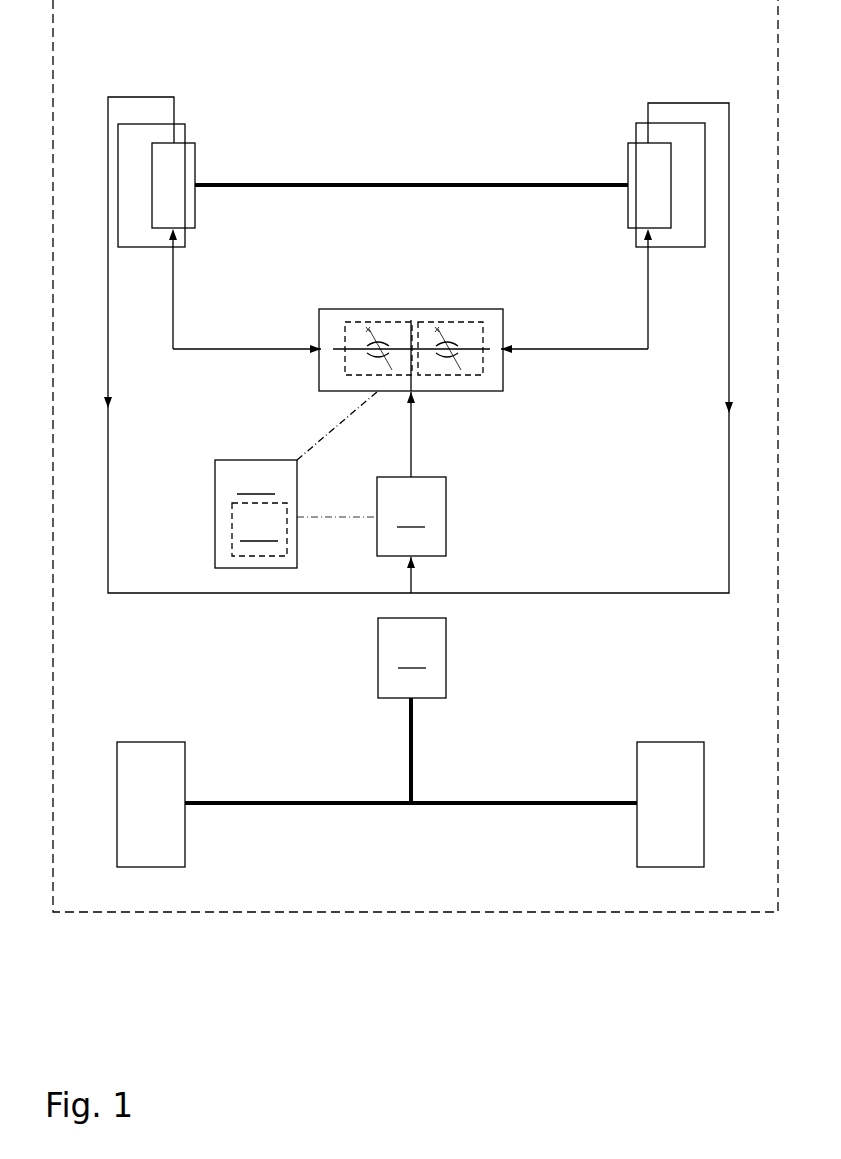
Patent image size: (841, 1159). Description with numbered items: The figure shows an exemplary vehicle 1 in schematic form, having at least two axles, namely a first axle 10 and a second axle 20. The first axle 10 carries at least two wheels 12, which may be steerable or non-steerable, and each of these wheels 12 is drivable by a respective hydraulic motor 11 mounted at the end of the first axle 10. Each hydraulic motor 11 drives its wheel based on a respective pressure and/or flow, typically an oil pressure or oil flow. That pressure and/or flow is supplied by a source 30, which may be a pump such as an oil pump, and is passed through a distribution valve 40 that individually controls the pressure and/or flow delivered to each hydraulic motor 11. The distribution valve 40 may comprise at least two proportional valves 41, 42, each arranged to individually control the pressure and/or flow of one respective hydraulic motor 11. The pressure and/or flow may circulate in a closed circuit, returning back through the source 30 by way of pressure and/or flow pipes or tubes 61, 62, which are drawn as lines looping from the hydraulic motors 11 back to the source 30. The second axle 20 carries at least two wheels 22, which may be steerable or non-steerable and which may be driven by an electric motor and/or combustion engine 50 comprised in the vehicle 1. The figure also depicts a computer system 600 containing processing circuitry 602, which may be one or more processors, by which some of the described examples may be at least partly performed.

The vehicle 1 is at (260, 932).
The first axle 10 is at (443, 165).
The hydraulic motor 11 is at (190, 158).
The wheel 12 is at (143, 135).
The second axle 20 is at (512, 800).
The wheel 22 is at (187, 752).
The source 30 is at (411, 516).
The distribution valve 40 is at (418, 308).
The proportional valve 41 is at (362, 375).
The proportional valve 42 is at (441, 375).
The electric motor and/or combustion engine 50 is at (412, 710).
The pressure and/or flow pipe or tube 61 is at (116, 591).
The pressure and/or flow pipe or tube 62 is at (591, 591).
The computer system 600 is at (296, 479).
The processing circuitry 602 is at (259, 529).